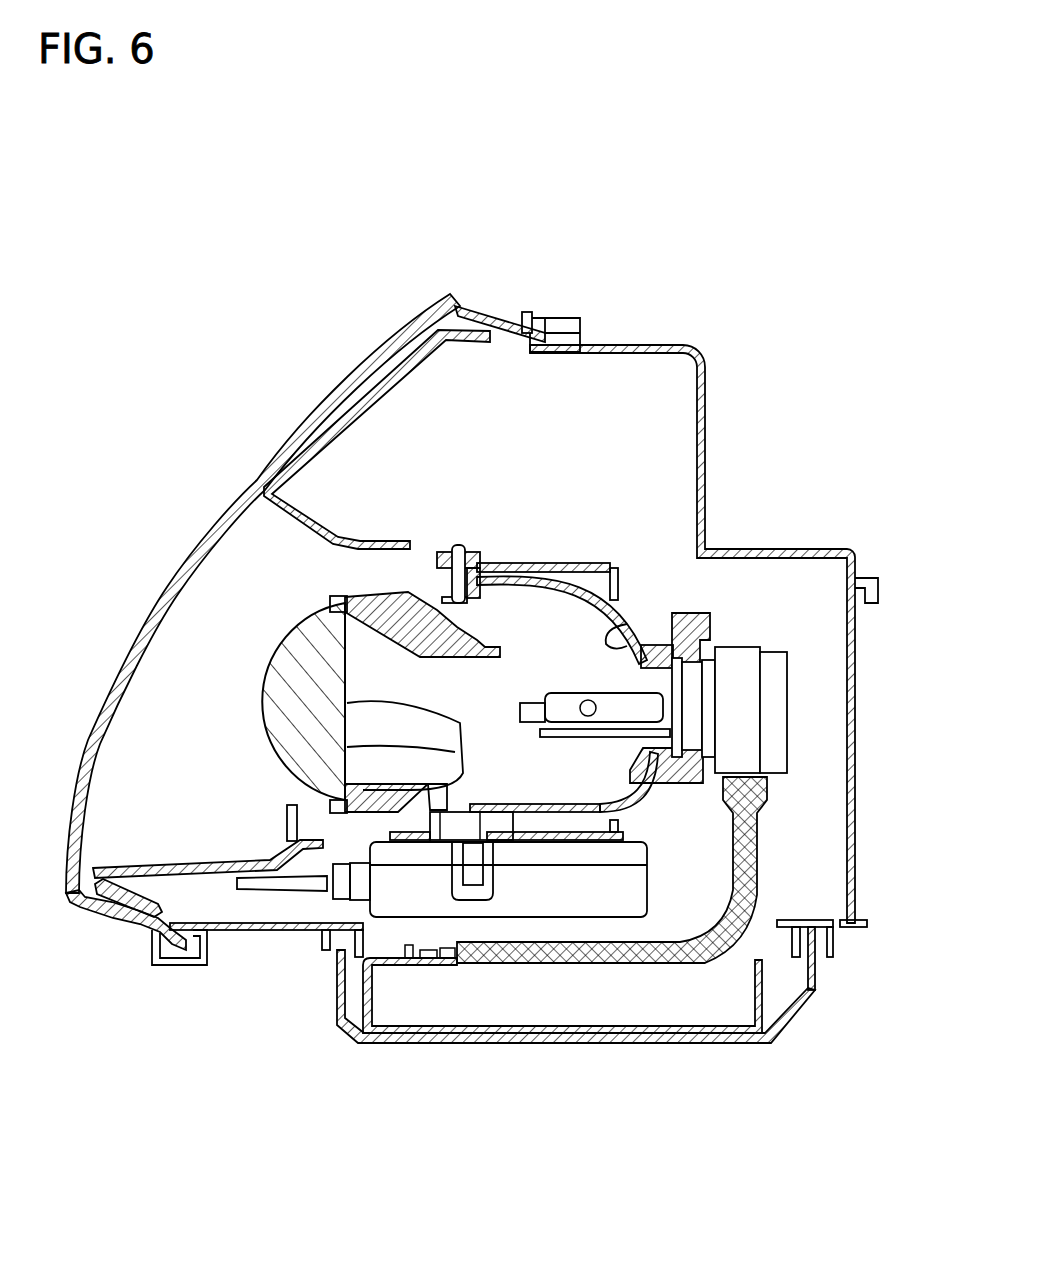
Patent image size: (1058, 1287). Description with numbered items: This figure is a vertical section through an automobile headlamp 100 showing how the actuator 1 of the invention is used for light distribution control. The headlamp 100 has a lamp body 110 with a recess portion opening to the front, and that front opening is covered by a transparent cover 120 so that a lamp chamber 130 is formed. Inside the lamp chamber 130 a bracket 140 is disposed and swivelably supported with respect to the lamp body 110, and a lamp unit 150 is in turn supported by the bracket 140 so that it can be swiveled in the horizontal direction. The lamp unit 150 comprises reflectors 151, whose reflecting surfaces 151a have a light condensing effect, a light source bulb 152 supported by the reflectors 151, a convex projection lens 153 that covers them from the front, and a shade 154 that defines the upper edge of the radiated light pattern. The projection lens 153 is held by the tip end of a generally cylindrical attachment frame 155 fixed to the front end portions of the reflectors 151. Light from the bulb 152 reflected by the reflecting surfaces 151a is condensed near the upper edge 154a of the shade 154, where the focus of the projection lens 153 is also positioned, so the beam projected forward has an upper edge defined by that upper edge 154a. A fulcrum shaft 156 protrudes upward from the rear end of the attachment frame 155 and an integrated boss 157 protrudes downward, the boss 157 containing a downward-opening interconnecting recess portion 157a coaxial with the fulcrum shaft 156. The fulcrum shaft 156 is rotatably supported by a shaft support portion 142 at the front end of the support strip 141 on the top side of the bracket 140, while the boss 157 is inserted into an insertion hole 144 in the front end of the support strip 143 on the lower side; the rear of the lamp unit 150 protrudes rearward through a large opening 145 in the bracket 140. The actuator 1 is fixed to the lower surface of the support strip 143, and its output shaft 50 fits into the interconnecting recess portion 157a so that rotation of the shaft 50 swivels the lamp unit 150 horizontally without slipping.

The automobile headlamp 100 is at (282, 333).
The lamp body 110 is at (665, 345).
The transparent cover 120 is at (273, 453).
The lamp chamber 130 is at (660, 415).
The bracket 140 is at (558, 565).
The support strip 141 is at (620, 567).
The shaft support portion 142 is at (477, 560).
The support strip 143 is at (620, 823).
The insertion hole 144 is at (527, 815).
The large opening 145 is at (612, 811).
The lamp unit 150 is at (545, 575).
The reflector 151 is at (593, 570).
The reflecting surface 151a is at (630, 643).
The light source bulb 152 is at (575, 692).
The projection lens 153 is at (280, 660).
The shade 154 is at (347, 748).
The upper edge 154a is at (347, 705).
The attachment frame 155 is at (400, 578).
The fulcrum shaft 156 is at (460, 545).
The integrated boss 157 is at (347, 1020).
The interconnecting recess portion 157a is at (417, 825).
The output shaft 50 is at (452, 815).
The actuator 1 is at (607, 890).